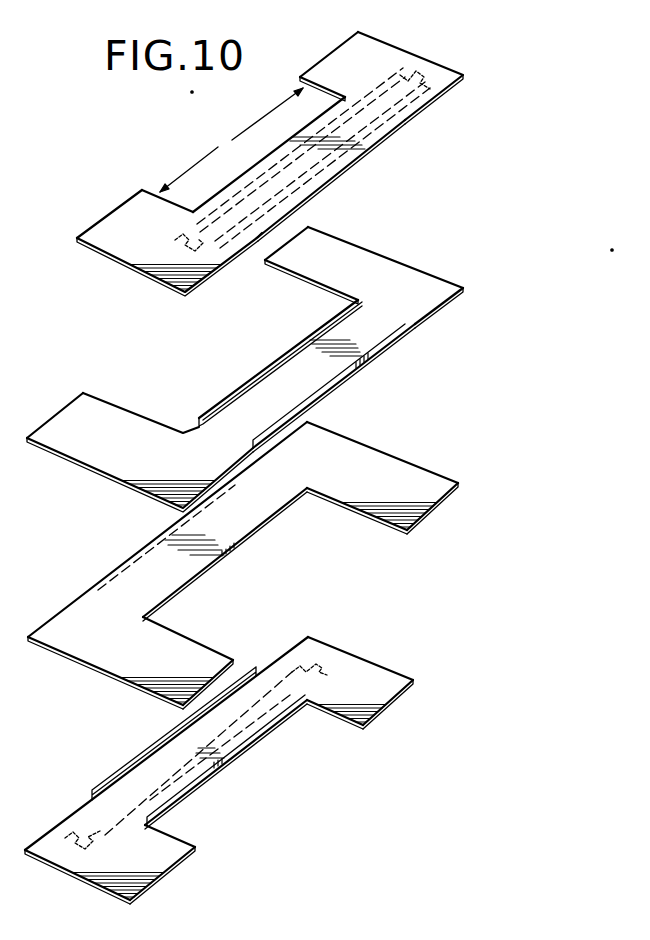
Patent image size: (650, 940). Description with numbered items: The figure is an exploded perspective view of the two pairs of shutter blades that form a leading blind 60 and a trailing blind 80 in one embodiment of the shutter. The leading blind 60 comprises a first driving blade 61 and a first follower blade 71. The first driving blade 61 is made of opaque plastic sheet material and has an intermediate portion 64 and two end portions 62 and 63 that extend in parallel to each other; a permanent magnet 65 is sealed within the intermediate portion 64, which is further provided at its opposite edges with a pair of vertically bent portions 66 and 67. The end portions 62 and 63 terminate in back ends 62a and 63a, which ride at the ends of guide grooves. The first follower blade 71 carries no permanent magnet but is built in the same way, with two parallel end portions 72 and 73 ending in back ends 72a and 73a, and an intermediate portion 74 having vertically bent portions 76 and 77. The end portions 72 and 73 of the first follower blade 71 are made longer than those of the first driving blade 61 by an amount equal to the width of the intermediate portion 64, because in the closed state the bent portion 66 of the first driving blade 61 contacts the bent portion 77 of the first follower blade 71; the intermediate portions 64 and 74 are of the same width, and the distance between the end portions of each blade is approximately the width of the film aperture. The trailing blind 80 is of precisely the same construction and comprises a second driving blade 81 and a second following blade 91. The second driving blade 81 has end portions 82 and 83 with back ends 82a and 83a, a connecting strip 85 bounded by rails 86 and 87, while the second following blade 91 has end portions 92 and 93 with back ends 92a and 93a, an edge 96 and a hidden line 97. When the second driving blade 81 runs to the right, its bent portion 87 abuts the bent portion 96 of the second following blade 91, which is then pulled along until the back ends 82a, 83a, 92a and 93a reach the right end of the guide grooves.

The leading blind 60 is at (497, 50).
The first driving blade 61 is at (445, 62).
The end portion 62 is at (393, 50).
The back end 62a is at (328, 63).
The end portion 63 is at (147, 205).
The back end 63a is at (103, 222).
The intermediate portion 64 is at (370, 134).
The permanent magnet 65 is at (410, 112).
The vertically bent portion 66 is at (340, 170).
The vertically bent portion 67 is at (296, 158).
The first follower blade 71 is at (415, 262).
The end portion 72 is at (360, 250).
The back end 72a is at (300, 228).
The end portion 73 is at (120, 412).
The back end 73a is at (58, 412).
The intermediate portion 74 is at (427, 315).
The vertically bent portion 76 is at (377, 353).
The vertically bent portion 77 is at (307, 337).
The trailing blind 80 is at (492, 675).
The second driving blade 81 is at (357, 652).
The end portion 82 is at (387, 673).
The back end 82a is at (395, 705).
The end portion 83 is at (100, 862).
The back end 83a is at (172, 870).
The connecting strip 85 is at (265, 735).
The lower rail 86 is at (242, 752).
The bent portion 87 is at (168, 738).
The second following blade 91 is at (398, 452).
The end portion 92 is at (430, 480).
The back end 92a is at (442, 502).
The end portion 93 is at (193, 648).
The back end 93a is at (240, 663).
The bent portion 96 is at (213, 566).
The hidden conductor line 97 is at (120, 565).